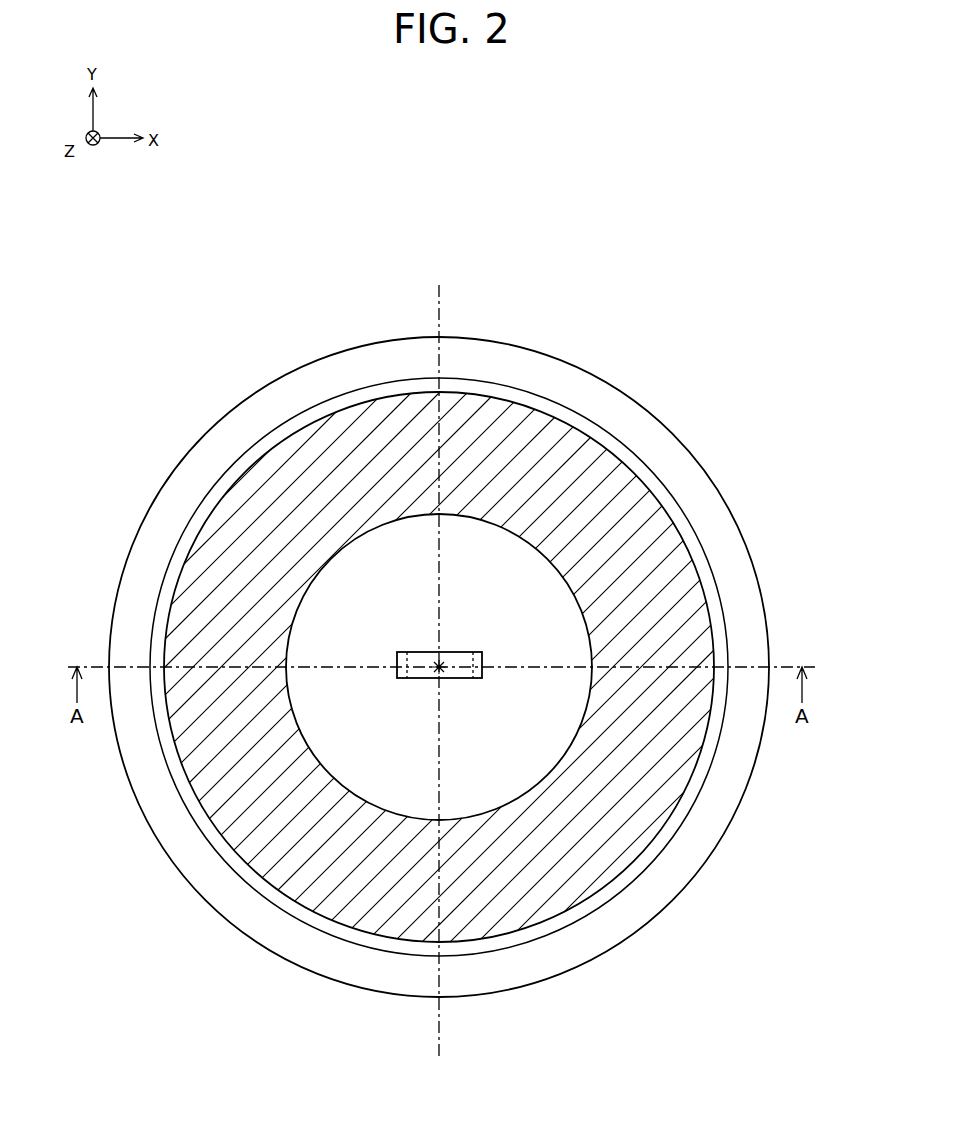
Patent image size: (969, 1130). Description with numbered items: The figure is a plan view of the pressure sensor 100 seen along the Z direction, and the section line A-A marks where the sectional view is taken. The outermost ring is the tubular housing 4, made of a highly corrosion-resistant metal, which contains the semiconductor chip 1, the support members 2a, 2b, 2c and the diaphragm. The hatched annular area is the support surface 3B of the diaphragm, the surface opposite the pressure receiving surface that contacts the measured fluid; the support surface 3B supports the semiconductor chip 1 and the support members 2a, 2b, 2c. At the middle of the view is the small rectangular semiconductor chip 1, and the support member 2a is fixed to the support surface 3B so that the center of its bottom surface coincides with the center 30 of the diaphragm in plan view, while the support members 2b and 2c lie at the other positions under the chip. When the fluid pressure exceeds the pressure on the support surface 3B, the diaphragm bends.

The pressure sensor 100 is at (770, 262).
The housing 4 is at (606, 402).
The support surface 3B is at (571, 603).
The center of the diaphragm 30 is at (439, 667).
The semiconductor chip 1 is at (397, 661).
The support member 2a is at (439, 667).
The support member 2b is at (403, 679).
The support member 2c is at (481, 679).